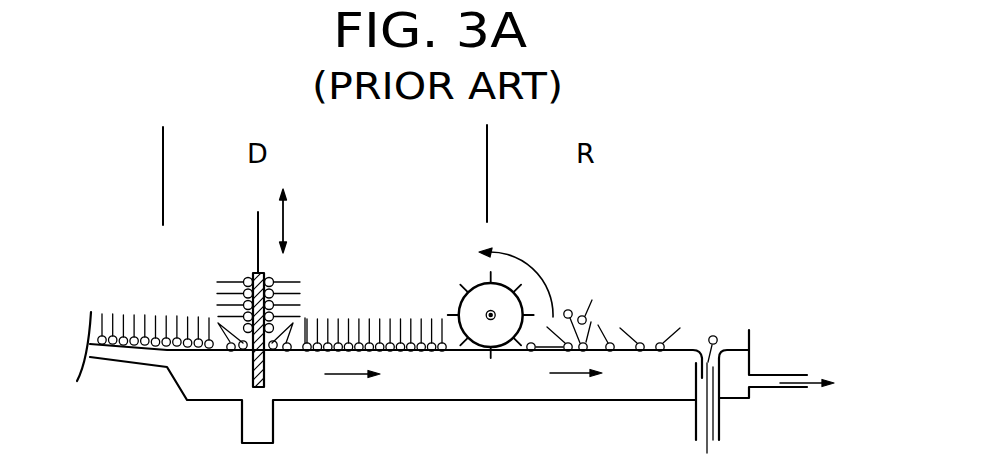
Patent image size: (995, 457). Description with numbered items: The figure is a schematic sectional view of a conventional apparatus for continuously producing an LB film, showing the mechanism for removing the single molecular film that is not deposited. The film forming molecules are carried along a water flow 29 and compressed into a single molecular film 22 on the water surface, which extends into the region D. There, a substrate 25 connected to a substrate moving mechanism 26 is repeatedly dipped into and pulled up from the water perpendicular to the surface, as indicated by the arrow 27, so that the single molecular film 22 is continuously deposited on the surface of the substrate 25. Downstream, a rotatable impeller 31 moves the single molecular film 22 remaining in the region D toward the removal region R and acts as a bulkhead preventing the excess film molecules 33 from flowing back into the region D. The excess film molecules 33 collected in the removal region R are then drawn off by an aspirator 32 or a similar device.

The single molecular film 22 is at (217, 313).
The substrate 25 is at (251, 275).
The substrate moving mechanism 26 is at (257, 229).
The arrow 27 is at (286, 218).
The water flow 29 is at (347, 376).
The rotatable impeller 31 is at (460, 297).
The aspirator 32 is at (695, 423).
The excess film molecules 33 is at (683, 302).